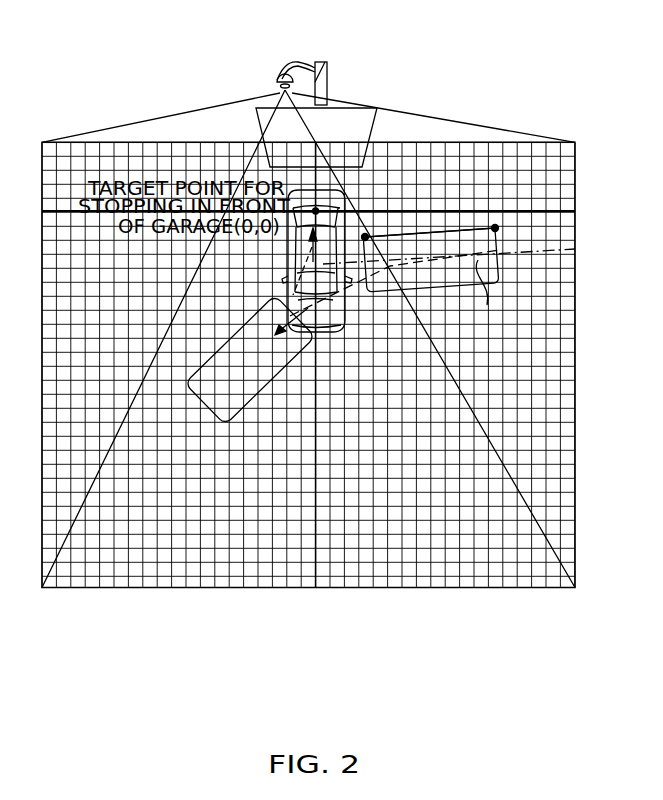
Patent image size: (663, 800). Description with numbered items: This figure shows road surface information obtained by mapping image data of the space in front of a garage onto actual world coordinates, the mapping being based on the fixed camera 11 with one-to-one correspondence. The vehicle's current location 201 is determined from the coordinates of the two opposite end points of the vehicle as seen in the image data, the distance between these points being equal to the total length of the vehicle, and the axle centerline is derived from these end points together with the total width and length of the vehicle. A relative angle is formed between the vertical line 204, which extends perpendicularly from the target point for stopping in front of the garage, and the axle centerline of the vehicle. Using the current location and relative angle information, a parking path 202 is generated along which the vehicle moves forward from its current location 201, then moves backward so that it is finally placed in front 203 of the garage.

The camera 11 is at (303, 62).
The current location of the vehicle 201 is at (503, 267).
The parking path 202 is at (212, 417).
The front of the garage 203 is at (385, 178).
The vertical line 204 is at (317, 548).